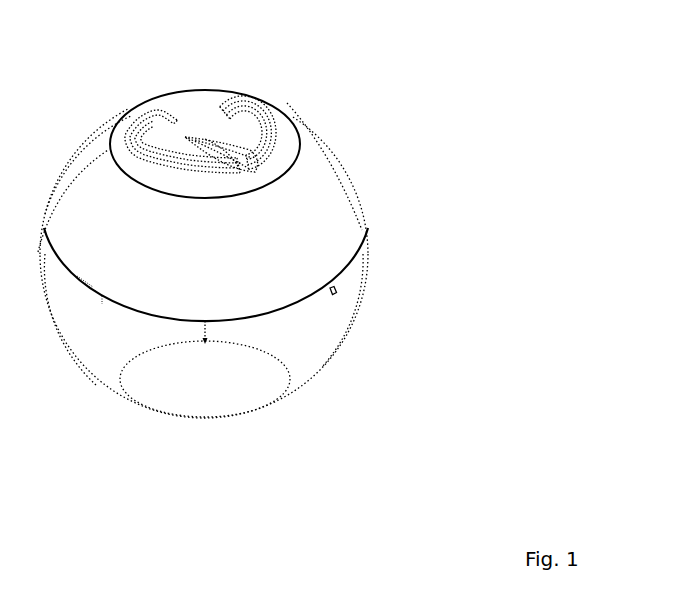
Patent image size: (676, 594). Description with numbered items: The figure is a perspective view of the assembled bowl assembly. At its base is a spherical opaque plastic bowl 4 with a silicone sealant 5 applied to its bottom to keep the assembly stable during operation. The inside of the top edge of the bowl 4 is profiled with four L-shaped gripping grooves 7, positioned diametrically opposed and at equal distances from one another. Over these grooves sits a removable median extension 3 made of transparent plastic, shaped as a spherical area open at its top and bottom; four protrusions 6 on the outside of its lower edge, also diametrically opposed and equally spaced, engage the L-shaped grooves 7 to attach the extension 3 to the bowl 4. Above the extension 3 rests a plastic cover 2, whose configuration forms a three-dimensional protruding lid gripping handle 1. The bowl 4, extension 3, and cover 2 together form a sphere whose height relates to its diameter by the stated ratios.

The lid gripping handle 1 is at (273, 113).
The plastic cover 2 is at (287, 152).
The median removable extension 3 is at (287, 230).
The opaque plastic bowl 4 is at (298, 342).
The silicone sealant 5 is at (287, 387).
The protrusions 6 is at (313, 295).
The L-shaped gripping grooves 7 is at (335, 294).